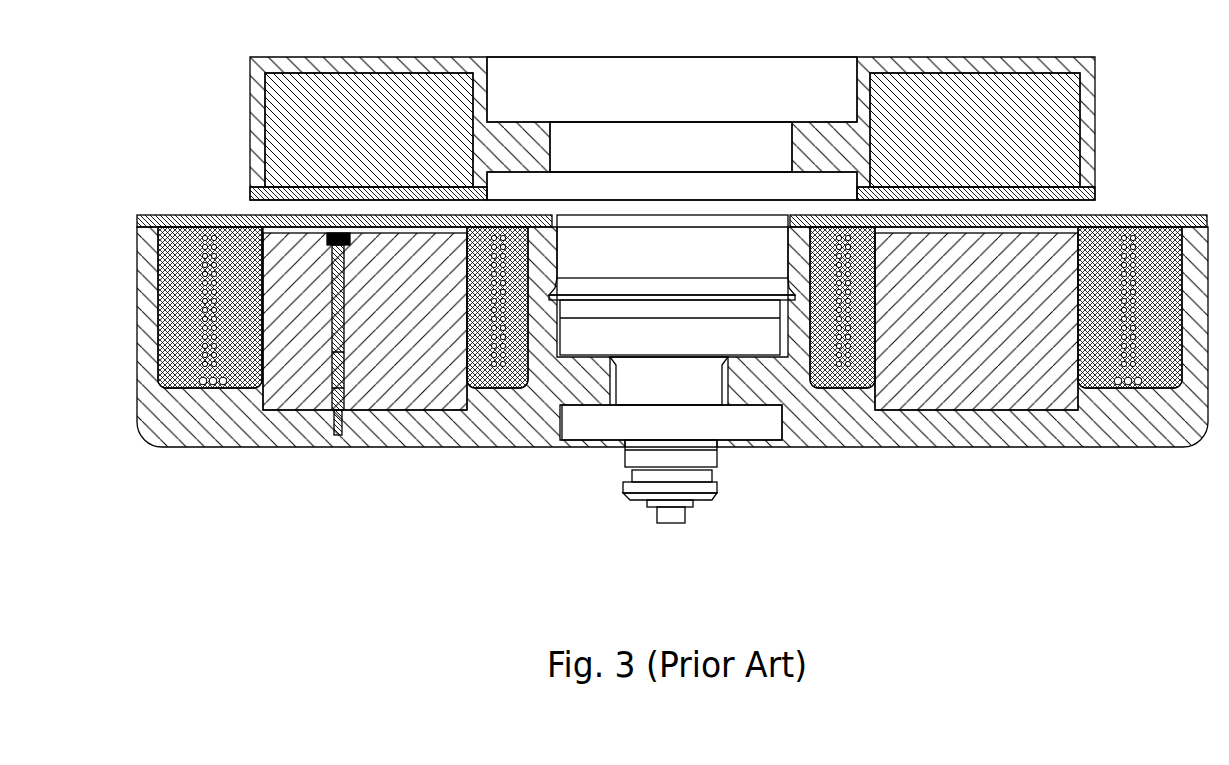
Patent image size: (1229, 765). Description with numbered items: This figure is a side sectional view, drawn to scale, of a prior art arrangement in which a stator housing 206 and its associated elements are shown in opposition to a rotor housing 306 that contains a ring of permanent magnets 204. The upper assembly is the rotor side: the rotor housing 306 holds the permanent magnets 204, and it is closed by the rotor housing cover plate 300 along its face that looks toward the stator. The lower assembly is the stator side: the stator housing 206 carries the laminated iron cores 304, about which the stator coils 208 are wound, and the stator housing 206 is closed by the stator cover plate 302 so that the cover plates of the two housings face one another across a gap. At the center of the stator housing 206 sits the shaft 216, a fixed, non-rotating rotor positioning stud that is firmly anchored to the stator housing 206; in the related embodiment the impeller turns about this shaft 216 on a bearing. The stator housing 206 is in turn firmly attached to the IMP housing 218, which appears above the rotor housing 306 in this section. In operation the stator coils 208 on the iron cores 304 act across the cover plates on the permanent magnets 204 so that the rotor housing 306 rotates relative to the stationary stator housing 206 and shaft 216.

The permanent magnets 204 is at (952, 144).
The stator housing 206 is at (825, 431).
The stator coils 208 is at (1134, 236).
The shaft 216 is at (650, 256).
The IMP housing 218 is at (653, 101).
The rotor housing cover plate 300 is at (250, 198).
The stator cover plate 302 is at (197, 226).
The laminated iron cores 304 is at (952, 326).
The rotor housing 306 is at (1097, 139).